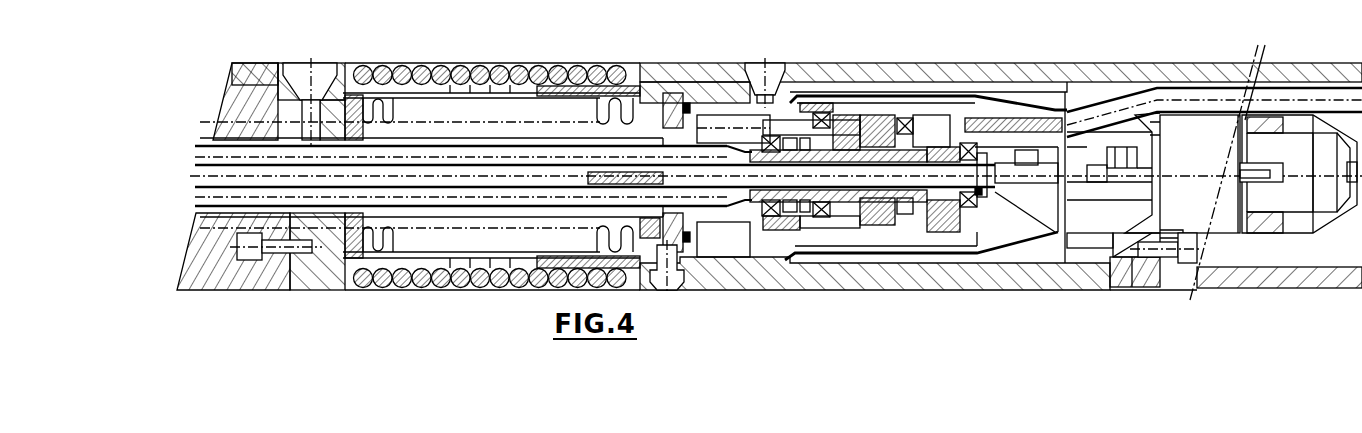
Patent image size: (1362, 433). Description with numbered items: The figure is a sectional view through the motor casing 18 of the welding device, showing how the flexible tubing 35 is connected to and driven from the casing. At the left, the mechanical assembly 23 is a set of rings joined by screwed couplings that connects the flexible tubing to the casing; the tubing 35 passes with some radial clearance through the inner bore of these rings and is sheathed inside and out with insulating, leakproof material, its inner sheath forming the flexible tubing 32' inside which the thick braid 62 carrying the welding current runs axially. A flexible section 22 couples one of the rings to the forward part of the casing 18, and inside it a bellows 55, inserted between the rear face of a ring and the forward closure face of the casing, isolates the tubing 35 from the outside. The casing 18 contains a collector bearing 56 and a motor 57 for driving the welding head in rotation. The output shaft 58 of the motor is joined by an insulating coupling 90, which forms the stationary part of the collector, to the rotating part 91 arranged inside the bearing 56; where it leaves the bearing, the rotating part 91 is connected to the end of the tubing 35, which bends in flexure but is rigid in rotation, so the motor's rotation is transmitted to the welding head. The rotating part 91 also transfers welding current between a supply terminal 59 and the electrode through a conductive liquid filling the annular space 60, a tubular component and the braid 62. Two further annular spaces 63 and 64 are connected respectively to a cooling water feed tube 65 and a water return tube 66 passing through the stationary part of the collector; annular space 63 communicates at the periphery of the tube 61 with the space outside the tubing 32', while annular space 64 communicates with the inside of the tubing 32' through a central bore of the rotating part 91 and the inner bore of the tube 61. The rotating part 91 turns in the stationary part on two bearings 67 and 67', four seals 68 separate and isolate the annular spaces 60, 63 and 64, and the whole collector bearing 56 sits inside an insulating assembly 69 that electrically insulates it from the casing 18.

The motor casing 18 is at (749, 291).
The flexible section 22 is at (490, 288).
The mechanical assembly 23 is at (253, 294).
The flexible tubing (inner sheath) 32' is at (473, 161).
The flexible tubing 35 is at (411, 158).
The bellows 55 is at (423, 270).
The collector bearing 56 is at (966, 244).
The motor 57 is at (1220, 222).
The output shaft 58 is at (1093, 178).
The supply terminal 59 is at (997, 132).
The annular space 60 is at (870, 196).
The tube 61 is at (663, 162).
The thick braid 62 is at (632, 171).
The annular space 63 is at (822, 203).
The annular space 64 is at (923, 190).
The cooling water feed tube 65 is at (840, 150).
The water return tube 66 is at (952, 122).
The bearing 67 is at (753, 229).
The bearing 67' is at (996, 213).
The seals 68 is at (806, 118).
The insulating assembly 69 is at (716, 242).
The insulating coupling 90 is at (1045, 205).
The rotating part 91 is at (900, 190).